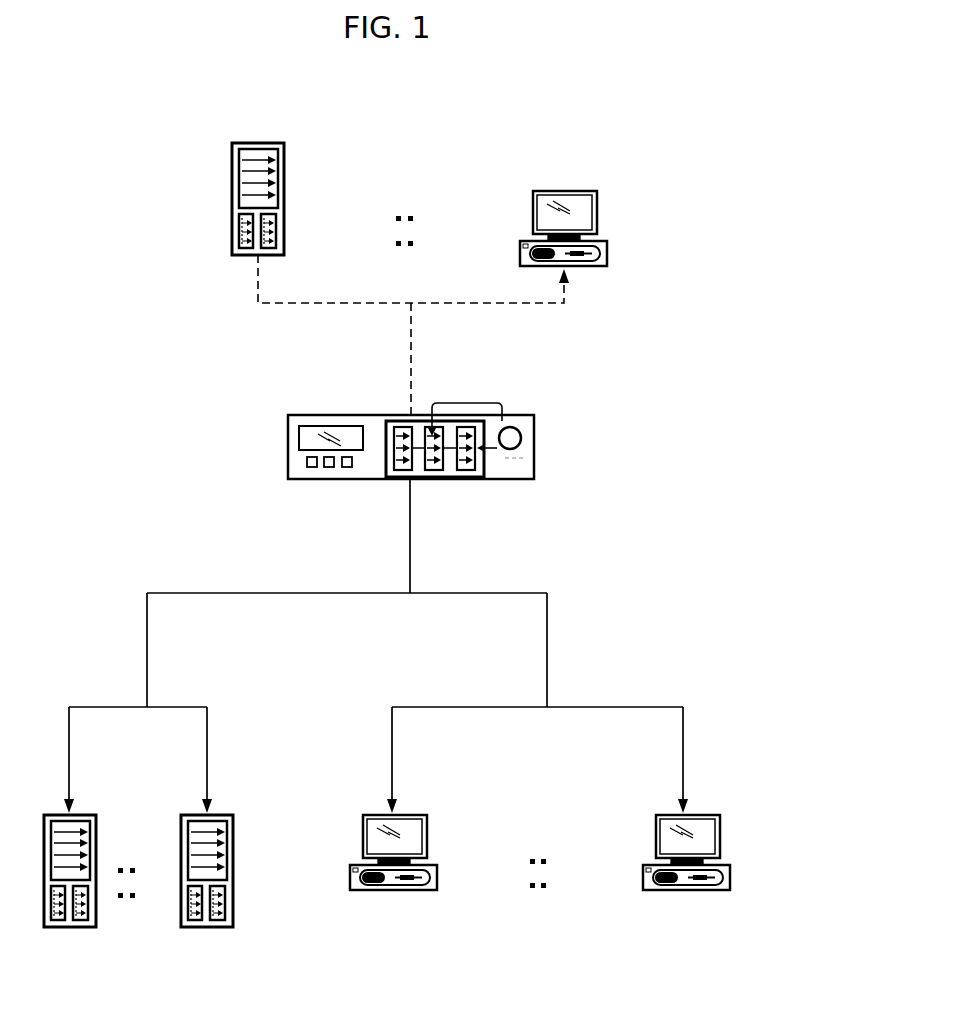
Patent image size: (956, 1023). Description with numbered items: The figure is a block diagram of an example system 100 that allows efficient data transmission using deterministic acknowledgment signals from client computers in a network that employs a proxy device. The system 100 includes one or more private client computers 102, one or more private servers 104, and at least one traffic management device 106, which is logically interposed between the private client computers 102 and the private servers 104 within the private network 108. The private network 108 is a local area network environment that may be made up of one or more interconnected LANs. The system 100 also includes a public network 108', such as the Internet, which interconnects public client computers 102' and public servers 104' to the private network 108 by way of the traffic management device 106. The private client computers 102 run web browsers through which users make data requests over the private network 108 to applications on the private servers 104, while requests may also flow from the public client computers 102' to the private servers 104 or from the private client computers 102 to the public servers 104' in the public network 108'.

The system 100 is at (485, 140).
The private client computer 102 is at (553, 873).
The public client computer 102' is at (597, 206).
The private server 104 is at (206, 913).
The public server 104' is at (316, 196).
The traffic management device 106 is at (468, 413).
The private network 108 is at (376, 646).
The public network 108' is at (413, 335).